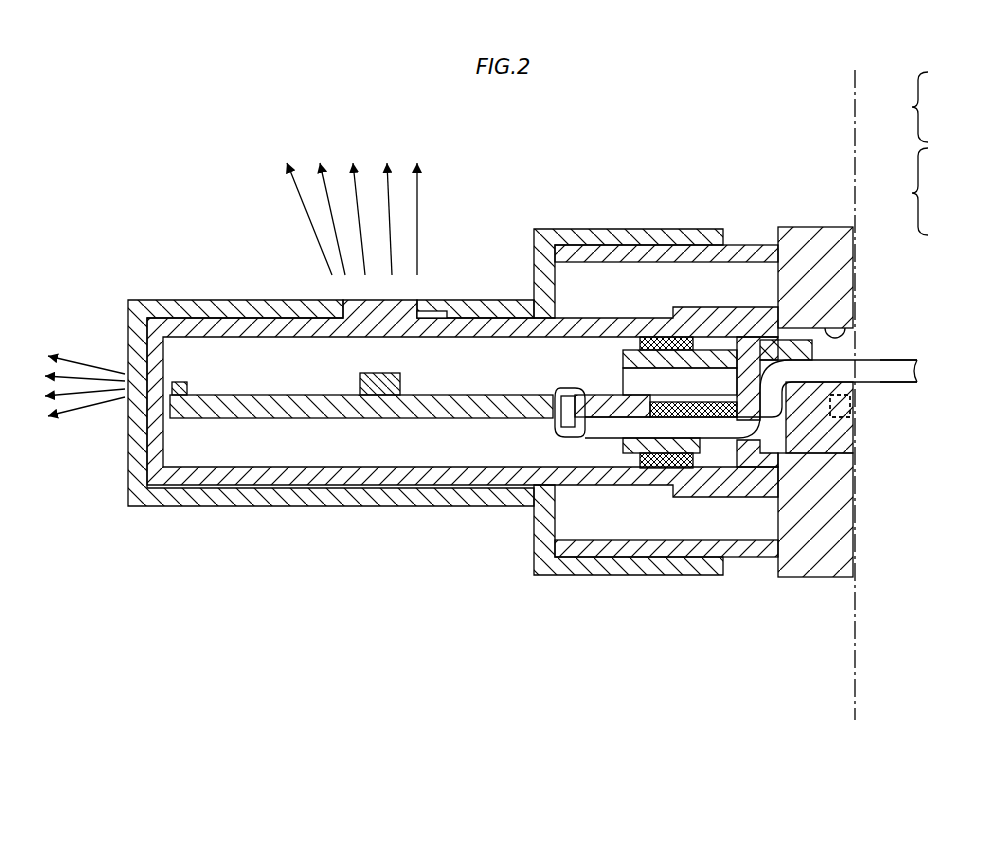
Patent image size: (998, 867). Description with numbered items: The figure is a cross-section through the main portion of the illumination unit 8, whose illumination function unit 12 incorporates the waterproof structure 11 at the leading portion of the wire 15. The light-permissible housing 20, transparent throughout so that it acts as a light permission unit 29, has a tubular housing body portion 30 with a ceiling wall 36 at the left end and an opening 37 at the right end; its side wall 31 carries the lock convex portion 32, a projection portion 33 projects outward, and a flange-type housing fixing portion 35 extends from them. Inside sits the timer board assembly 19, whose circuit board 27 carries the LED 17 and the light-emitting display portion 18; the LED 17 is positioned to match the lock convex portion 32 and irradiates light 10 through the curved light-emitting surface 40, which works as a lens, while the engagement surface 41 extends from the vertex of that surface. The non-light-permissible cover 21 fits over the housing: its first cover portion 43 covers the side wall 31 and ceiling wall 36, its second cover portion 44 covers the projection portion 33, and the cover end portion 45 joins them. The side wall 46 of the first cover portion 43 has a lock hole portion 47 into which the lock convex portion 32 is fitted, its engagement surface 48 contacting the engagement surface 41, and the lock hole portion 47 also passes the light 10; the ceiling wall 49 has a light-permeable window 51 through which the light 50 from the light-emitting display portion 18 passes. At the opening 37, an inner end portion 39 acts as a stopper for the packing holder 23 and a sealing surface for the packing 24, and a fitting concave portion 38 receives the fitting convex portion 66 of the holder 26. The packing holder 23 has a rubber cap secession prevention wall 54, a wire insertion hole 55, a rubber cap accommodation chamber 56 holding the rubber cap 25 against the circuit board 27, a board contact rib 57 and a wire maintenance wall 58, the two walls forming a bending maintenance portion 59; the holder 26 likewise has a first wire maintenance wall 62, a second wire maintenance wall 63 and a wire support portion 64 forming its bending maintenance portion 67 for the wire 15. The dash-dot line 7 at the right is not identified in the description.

The vehicle body panel 7 is at (852, 100).
The illumination unit 8 is at (212, 507).
The light 10 is at (297, 193).
The waterproof structure 11 is at (537, 262).
The illumination function unit 12 is at (278, 507).
The wire 15 is at (878, 383).
The LED 17 is at (365, 375).
The light-emitting display portion 18 is at (177, 382).
The timer board assembly 19 is at (470, 405).
The light-permissible housing 20 is at (392, 507).
The non-light-permissible cover 21 is at (342, 507).
The packing holder 23 is at (742, 335).
The packing 24 is at (650, 345).
The rubber cap 25 is at (748, 425).
The holder 26 is at (847, 445).
The circuit board 27 is at (487, 418).
The light permission unit 29 is at (430, 507).
The housing body portion 30 is at (600, 575).
The side wall 31 is at (480, 310).
The lock convex portion 32 is at (397, 298).
The projection portion 33 is at (573, 240).
The housing fixing portion 35 is at (812, 577).
The ceiling wall 36 is at (160, 445).
The opening 37 is at (840, 355).
The fitting concave portion 38 is at (850, 413).
The end portion 39 is at (678, 320).
The light-emitting surface 40 is at (382, 300).
The engagement surface 41 is at (443, 300).
The first cover portion 43 is at (240, 507).
The second cover portion 44 is at (635, 575).
The cover end portion 45 is at (533, 535).
The side wall 46 is at (232, 300).
The lock hole portion 47 is at (348, 300).
The engagement surface 48 is at (410, 320).
The ceiling wall 49 is at (130, 337).
The light 50 is at (118, 370).
The light-permeable window 51 is at (150, 378).
The rubber cap secession prevention wall 54 is at (718, 352).
The wire insertion hole 55 is at (745, 432).
The rubber cap accommodation chamber 56 is at (695, 465).
The board contact rib 57 is at (612, 352).
The wire maintenance wall 58 is at (810, 228).
The bending maintenance portion 59 is at (906, 107).
The first wire maintenance wall 62 is at (760, 440).
The second wire maintenance wall 63 is at (833, 453).
The wire support portion 64 is at (830, 372).
The fitting convex portion 66 is at (840, 406).
The bending maintenance portion 67 is at (906, 191).